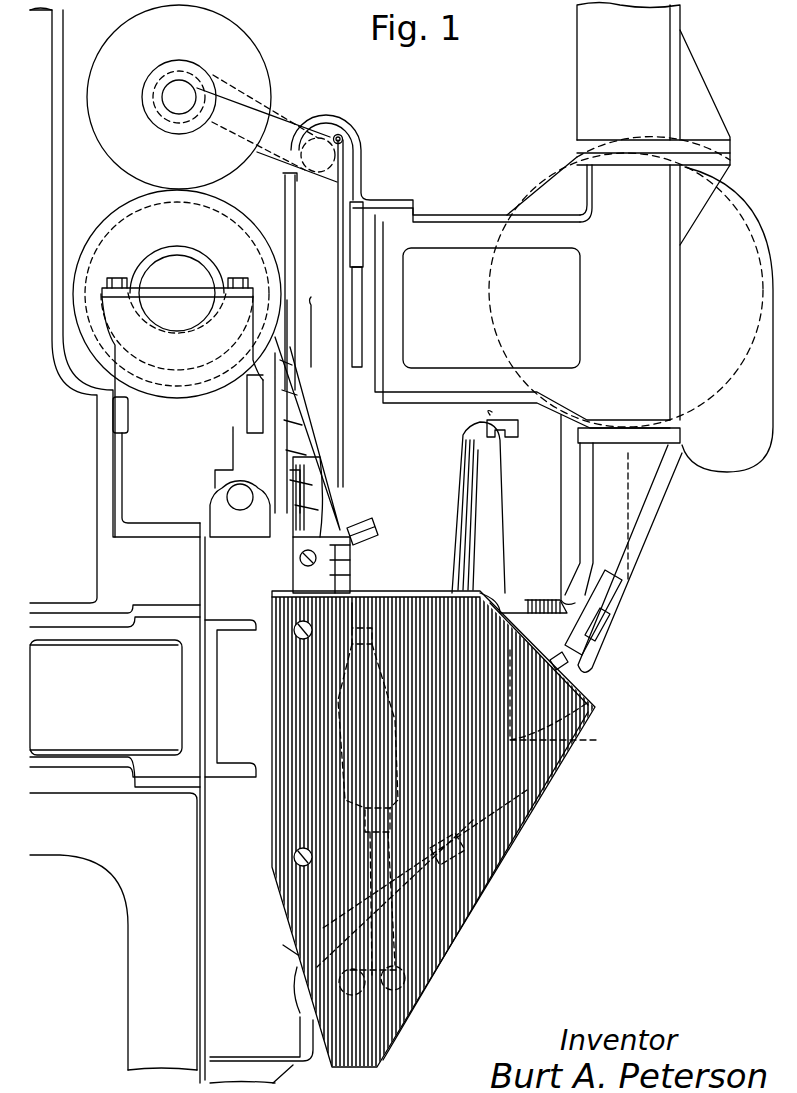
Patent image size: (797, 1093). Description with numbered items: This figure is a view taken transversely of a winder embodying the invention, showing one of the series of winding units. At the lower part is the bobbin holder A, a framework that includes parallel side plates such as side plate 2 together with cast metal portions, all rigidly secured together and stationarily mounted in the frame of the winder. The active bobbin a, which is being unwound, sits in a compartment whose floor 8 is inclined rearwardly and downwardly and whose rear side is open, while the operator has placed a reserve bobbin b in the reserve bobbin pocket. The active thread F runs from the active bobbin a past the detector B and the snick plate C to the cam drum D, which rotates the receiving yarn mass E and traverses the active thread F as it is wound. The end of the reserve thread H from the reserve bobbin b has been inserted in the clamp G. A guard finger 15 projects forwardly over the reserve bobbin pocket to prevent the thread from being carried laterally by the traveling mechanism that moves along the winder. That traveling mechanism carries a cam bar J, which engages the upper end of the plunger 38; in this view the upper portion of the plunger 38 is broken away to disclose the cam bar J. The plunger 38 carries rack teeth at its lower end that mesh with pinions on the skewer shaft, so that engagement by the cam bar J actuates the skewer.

The receiving yarn mass E is at (174, 97).
The cam drum D is at (177, 294).
The active thread F is at (292, 375).
The side plate 2 is at (457, 232).
The snick plate C is at (373, 522).
The detector B is at (332, 565).
The clamp G is at (508, 438).
The reserve thread H is at (503, 516).
The guard finger 15 is at (515, 603).
The cam bar J is at (570, 633).
The plunger 38 is at (565, 668).
The reserve bobbin b is at (566, 699).
The active bobbin a is at (401, 799).
The bobbin holder A is at (433, 830).
The floor 8 is at (290, 897).